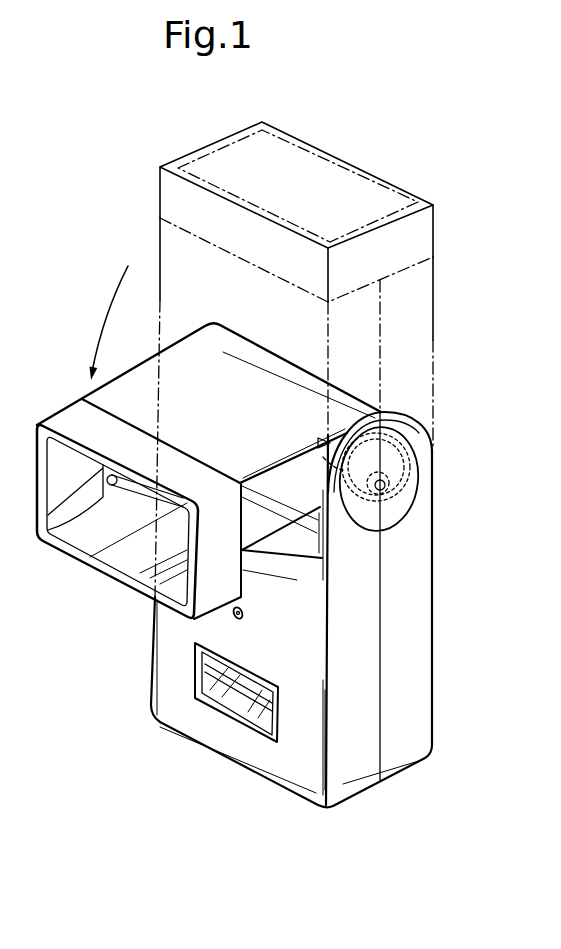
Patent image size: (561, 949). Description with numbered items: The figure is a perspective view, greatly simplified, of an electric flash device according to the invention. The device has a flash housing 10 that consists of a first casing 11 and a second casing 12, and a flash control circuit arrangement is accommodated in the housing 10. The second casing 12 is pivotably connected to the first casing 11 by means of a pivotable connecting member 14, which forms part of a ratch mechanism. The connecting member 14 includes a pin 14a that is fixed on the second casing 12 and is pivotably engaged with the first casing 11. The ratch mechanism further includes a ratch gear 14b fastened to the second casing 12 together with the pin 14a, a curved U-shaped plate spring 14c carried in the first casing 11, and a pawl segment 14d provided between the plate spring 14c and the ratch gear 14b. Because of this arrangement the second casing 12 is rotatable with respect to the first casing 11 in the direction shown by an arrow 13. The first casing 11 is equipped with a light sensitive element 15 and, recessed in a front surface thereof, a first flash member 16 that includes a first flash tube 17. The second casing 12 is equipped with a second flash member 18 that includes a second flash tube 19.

The flash housing 10 is at (432, 661).
The first casing 11 is at (413, 737).
The second casing 12 is at (143, 387).
The arrow 13 is at (97, 330).
The pivotable connecting member 14 is at (405, 486).
The pin 14a is at (397, 503).
The ratch gear 14b is at (323, 457).
The curved U-shaped plate spring 14c is at (403, 430).
The pawl segment 14d is at (400, 461).
The light sensitive element 15 is at (246, 614).
The first flash member 16 is at (225, 697).
The first flash tube 17 is at (241, 675).
The second flash member 18 is at (97, 527).
The second flash tube 19 is at (133, 490).